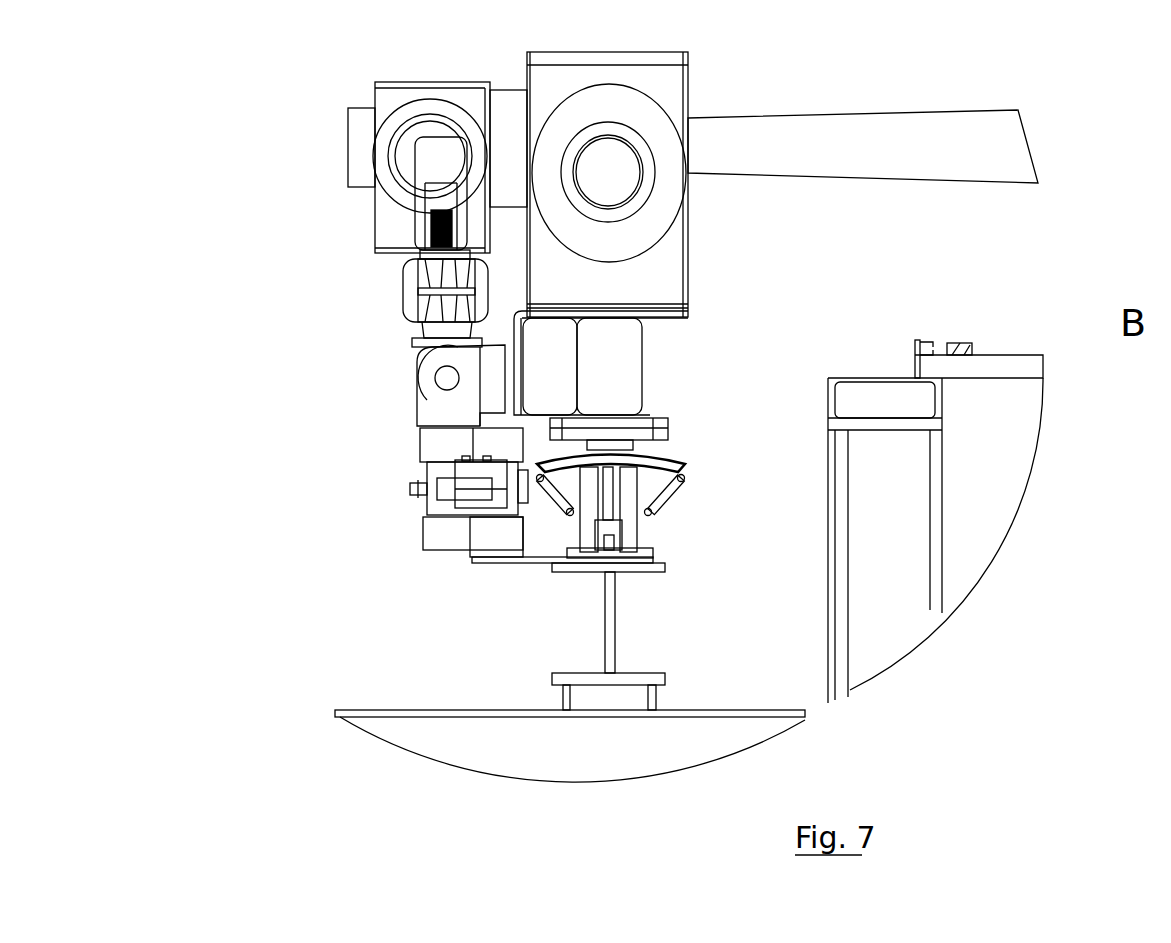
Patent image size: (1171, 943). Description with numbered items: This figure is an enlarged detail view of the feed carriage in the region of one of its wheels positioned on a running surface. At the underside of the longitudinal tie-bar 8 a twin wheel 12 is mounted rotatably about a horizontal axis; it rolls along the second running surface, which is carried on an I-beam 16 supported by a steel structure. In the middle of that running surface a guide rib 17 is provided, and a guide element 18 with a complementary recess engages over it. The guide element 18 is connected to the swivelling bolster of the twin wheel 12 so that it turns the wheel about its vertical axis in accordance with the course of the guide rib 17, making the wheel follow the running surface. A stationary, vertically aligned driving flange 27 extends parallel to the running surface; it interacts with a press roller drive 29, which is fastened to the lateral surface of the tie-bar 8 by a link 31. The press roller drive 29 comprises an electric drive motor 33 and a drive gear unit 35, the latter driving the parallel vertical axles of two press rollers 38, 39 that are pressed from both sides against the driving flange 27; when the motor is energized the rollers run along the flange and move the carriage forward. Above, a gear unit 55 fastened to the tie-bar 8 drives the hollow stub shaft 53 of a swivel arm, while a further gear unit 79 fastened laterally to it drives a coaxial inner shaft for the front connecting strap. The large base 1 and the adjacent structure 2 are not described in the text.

The base plate 1 is at (487, 733).
The guide structure 2 is at (980, 477).
The longitudinal tie-bar 8 is at (642, 371).
The twin wheel 12 is at (575, 530).
The I-beam 16 is at (613, 647).
The guide rib 17 is at (613, 565).
The guide element 18 is at (637, 545).
The driving flange 27 is at (432, 542).
The press roller drive 29 is at (388, 294).
The link 31 is at (480, 394).
The electric drive motor 33 is at (390, 200).
The drive gear unit 35 is at (417, 412).
The press roller 38 is at (435, 535).
The press roller 39 is at (497, 563).
The stub shaft 53 is at (887, 140).
The gear unit 55 is at (660, 77).
The further gear unit 79 is at (395, 155).